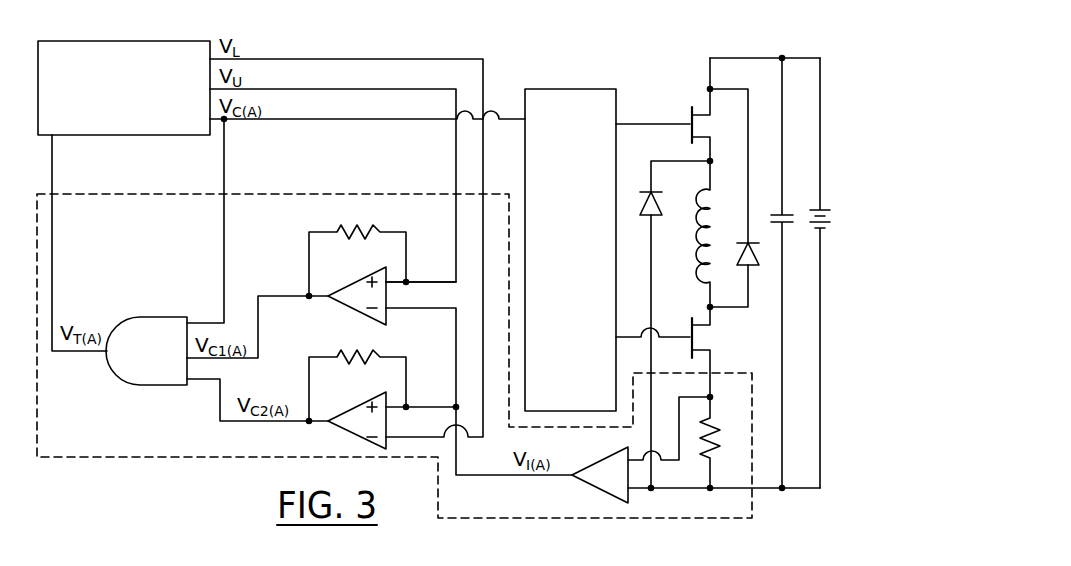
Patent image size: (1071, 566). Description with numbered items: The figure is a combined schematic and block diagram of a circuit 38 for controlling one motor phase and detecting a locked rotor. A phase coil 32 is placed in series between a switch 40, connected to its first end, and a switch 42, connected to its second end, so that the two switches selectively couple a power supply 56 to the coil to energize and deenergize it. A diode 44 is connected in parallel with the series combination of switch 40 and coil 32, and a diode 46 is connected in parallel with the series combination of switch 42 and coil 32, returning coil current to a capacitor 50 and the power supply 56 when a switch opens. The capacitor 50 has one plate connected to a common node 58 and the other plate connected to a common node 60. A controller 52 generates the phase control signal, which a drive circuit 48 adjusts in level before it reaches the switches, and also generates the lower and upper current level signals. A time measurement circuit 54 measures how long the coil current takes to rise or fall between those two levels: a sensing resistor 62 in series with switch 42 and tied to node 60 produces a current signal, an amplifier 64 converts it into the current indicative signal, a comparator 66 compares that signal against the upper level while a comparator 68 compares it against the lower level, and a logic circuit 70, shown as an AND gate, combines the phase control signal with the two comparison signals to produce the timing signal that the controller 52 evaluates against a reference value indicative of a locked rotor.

The phase coil 32 is at (700, 225).
The circuit 38 is at (615, 63).
The switch 40 is at (690, 117).
The switch 42 is at (690, 330).
The diode 44 is at (750, 264).
The diode 46 is at (655, 212).
The drive circuit 48 is at (556, 89).
The capacitor 50 is at (792, 224).
The controller 52 is at (118, 41).
The time measurement circuit 54 is at (190, 460).
The power supply 56 is at (824, 210).
The common node 58 is at (782, 58).
The common node 60 is at (782, 490).
The sensing resistor 62 is at (718, 433).
The amplifier 64 is at (588, 487).
The comparator 66 is at (360, 312).
The comparator 68 is at (360, 430).
The logic circuit 70 is at (147, 317).